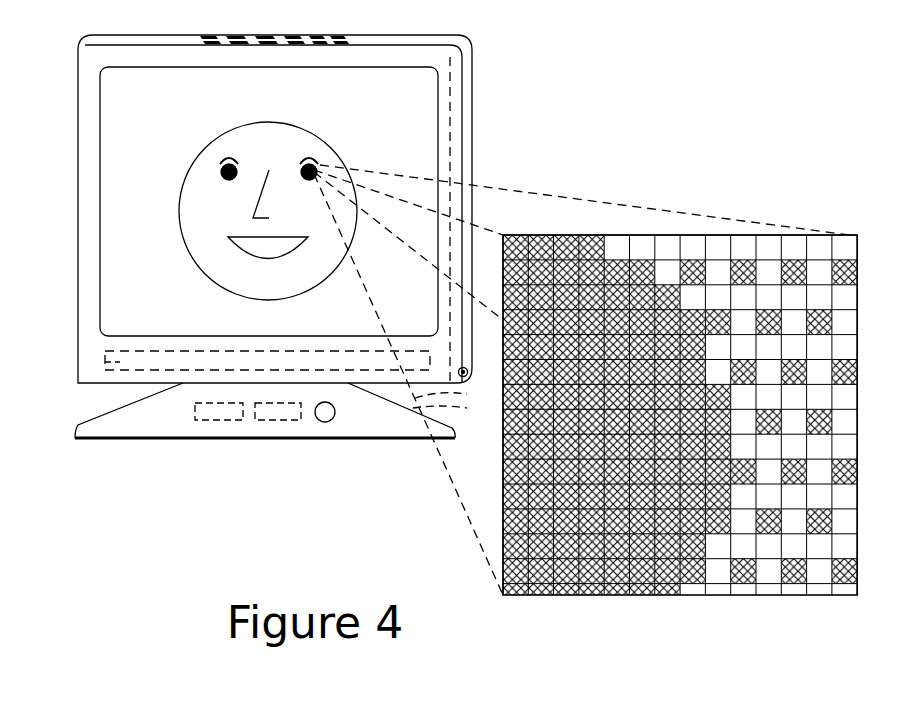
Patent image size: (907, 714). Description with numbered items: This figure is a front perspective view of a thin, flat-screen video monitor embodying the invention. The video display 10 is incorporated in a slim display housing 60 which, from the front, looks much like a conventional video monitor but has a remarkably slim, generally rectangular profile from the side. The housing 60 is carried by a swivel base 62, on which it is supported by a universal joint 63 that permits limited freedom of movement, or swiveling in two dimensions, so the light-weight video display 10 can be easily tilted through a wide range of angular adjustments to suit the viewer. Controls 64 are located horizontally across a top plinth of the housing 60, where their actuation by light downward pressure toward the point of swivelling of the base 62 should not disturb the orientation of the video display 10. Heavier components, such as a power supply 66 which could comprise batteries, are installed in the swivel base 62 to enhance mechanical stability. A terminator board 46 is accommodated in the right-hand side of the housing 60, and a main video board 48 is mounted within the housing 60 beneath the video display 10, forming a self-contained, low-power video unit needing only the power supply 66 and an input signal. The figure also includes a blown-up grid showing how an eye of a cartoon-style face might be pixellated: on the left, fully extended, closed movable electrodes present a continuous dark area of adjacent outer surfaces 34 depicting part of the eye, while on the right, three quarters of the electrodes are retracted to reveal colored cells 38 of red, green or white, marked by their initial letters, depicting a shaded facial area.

The video display 10 is at (127, 303).
The outer surfaces 34 is at (575, 232).
The colored cells 38 is at (743, 233).
The terminator board 46 is at (453, 100).
The main video board 48 is at (105, 357).
The display housing 60 is at (92, 153).
The swivel base 62 is at (157, 412).
The universal joint 63 is at (466, 376).
The controls 64 is at (236, 40).
The power supply 66 is at (303, 422).